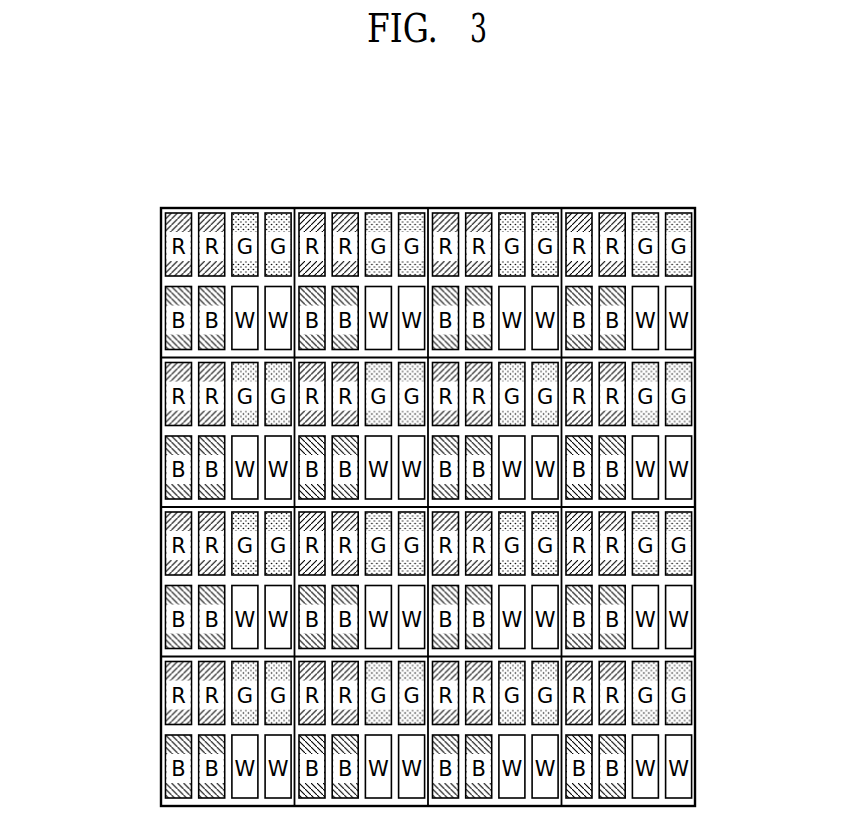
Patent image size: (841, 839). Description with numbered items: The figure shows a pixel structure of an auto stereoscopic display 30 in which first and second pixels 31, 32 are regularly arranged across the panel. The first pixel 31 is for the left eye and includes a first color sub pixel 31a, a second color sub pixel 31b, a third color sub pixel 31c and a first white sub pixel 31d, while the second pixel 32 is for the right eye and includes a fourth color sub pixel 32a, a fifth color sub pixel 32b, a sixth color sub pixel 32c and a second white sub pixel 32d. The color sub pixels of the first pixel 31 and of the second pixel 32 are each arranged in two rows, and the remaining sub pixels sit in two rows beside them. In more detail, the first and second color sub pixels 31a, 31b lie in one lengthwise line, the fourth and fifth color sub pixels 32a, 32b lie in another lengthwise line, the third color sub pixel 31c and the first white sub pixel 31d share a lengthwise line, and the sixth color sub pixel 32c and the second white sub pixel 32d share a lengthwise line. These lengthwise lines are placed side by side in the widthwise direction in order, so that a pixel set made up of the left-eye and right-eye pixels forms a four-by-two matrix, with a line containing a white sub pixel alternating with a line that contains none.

The display panel pixel array 30 is at (156, 200).
The first pixel 31 is at (62, 202).
The first color sub pixel 31a is at (164, 245).
The second color sub pixel 31b is at (164, 320).
The third color sub pixel 31c is at (231, 229).
The first white sub pixel 31d is at (231, 300).
The second pixel 32 is at (433, 166).
The fourth color sub pixel 32a is at (224, 260).
The fifth color sub pixel 32b is at (224, 333).
The sixth color sub pixel 32c is at (291, 260).
The second white sub pixel 32d is at (291, 333).